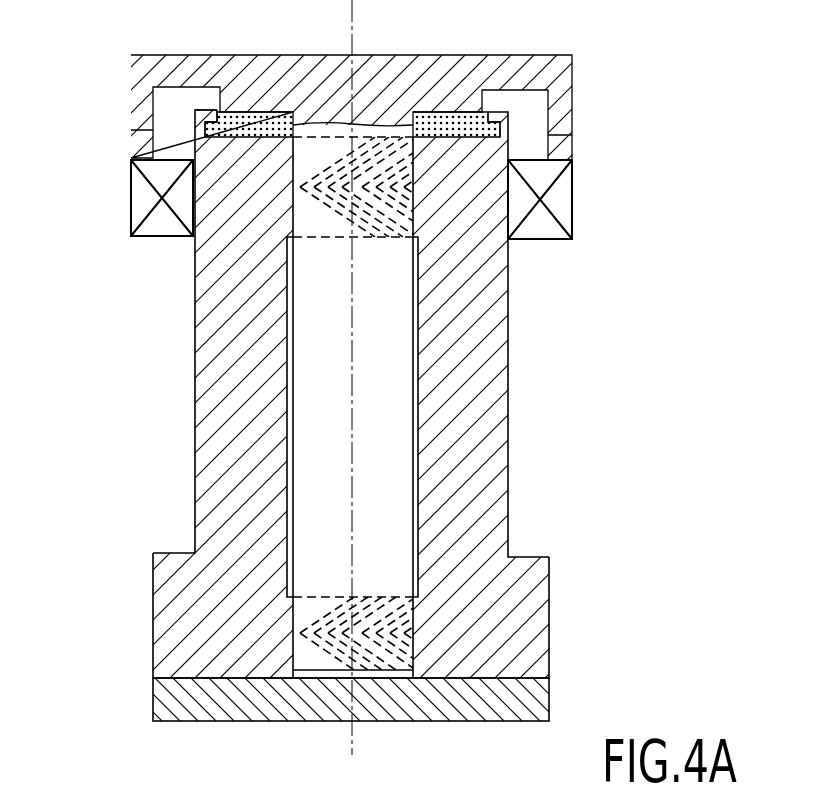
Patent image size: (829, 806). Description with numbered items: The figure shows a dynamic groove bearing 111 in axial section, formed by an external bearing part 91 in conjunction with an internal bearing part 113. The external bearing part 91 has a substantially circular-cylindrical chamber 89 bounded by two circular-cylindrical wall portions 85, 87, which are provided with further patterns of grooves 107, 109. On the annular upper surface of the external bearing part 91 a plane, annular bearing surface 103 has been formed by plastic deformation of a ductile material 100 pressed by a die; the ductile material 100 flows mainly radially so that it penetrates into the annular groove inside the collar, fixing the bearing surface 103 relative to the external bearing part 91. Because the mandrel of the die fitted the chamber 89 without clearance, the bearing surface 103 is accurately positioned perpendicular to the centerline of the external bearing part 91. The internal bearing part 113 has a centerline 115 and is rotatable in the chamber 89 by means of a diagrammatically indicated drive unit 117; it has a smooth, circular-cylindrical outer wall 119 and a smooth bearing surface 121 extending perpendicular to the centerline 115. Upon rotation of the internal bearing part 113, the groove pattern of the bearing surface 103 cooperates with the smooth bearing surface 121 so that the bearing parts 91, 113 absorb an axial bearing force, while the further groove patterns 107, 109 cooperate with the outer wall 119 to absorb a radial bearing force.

The circular-cylindrical wall portion 85 is at (400, 165).
The circular-cylindrical wall portion 87 is at (413, 618).
The chamber 89 is at (418, 320).
The external bearing part 91 is at (495, 390).
The ductile material 100 is at (456, 112).
The bearing surface 103 is at (167, 199).
The further pattern of grooves 107 is at (405, 205).
The further pattern of grooves 109 is at (375, 663).
The dynamic groove bearing 111 is at (106, 714).
The internal bearing part 113 is at (385, 447).
The centerline 115 is at (347, 387).
The drive unit 117 is at (108, 172).
The outer wall 119 is at (290, 352).
The bearing surface 121 is at (266, 110).